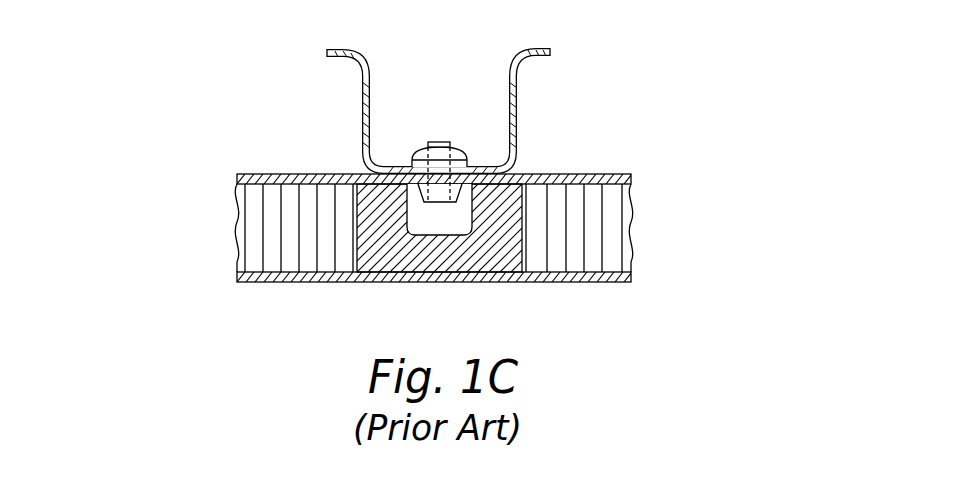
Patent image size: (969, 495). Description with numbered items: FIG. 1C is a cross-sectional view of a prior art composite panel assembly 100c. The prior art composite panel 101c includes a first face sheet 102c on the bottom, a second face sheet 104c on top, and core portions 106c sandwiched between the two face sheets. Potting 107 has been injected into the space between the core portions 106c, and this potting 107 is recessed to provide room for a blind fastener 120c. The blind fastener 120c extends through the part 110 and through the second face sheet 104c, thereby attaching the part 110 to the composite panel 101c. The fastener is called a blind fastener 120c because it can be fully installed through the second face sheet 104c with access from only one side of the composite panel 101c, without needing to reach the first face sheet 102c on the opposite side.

The electronic assembly (prior art) 100c is at (426, 205).
The composite panel 101c is at (461, 239).
The first face sheet 102c is at (283, 282).
The second face sheet 104c is at (262, 174).
The core portions 106c is at (237, 237).
The potting 107 is at (495, 256).
The part 110 is at (362, 103).
The blind fastener 120c is at (440, 146).